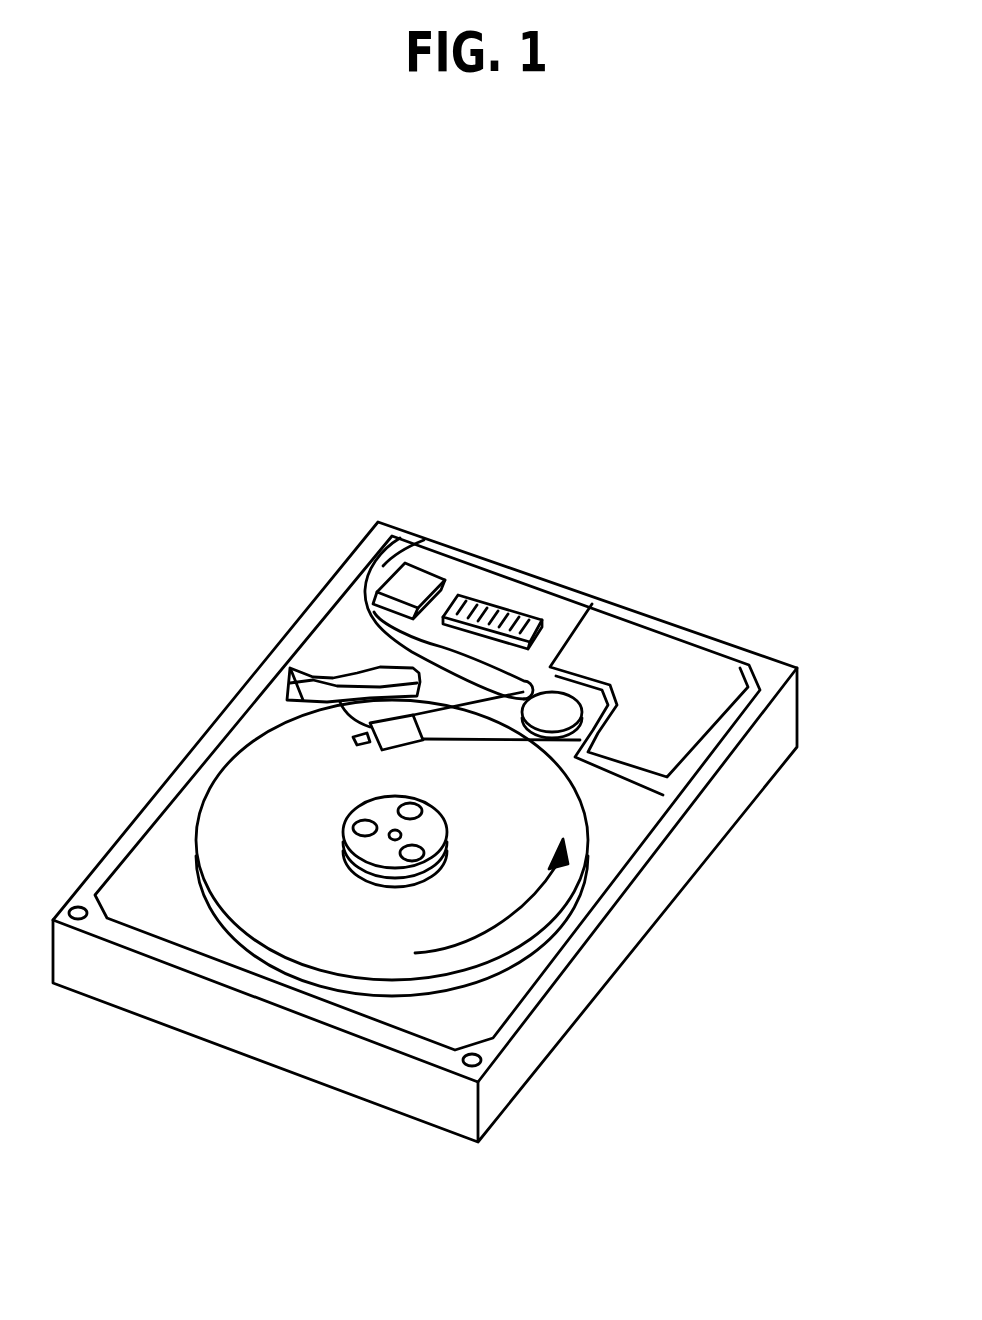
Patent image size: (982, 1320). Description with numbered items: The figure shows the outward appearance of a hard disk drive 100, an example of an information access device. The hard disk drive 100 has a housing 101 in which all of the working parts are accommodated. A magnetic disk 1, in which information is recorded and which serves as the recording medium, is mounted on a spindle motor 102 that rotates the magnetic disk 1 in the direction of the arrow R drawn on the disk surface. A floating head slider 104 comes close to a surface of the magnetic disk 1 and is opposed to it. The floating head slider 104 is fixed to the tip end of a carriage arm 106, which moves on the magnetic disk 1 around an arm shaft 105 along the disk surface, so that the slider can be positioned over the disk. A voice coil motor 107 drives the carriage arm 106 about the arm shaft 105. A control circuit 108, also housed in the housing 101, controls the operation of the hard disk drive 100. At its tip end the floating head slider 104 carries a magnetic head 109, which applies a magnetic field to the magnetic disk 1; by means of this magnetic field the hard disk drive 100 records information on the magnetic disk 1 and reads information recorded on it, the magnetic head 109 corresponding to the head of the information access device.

The hard disk drive 100 is at (641, 463).
The housing 101 is at (730, 740).
The magnetic disk 1 is at (312, 905).
The spindle motor 102 is at (381, 820).
The floating head slider 104 is at (395, 731).
The arm shaft 105 is at (552, 712).
The carriage arm 106 is at (493, 717).
The voice coil motor 107 is at (652, 662).
The control circuit 108 is at (478, 607).
The magnetic head 109 is at (352, 690).